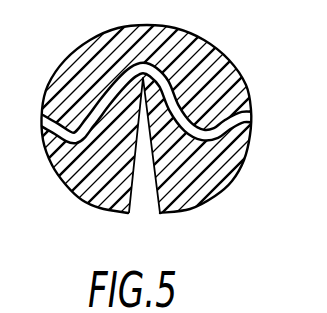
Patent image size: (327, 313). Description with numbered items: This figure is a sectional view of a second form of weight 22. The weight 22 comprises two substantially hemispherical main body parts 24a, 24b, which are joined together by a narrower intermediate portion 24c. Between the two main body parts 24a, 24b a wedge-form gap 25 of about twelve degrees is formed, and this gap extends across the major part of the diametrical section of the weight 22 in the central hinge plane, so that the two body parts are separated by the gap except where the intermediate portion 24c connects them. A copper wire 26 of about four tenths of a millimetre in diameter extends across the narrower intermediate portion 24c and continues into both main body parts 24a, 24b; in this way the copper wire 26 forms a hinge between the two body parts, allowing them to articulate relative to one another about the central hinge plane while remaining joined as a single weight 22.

The weight 22 is at (163, 133).
The main body part 24a is at (64, 171).
The main body part 24b is at (218, 177).
The narrower intermediate portion 24c is at (183, 30).
The wedge-form gap 25 is at (144, 199).
The copper wire 26 is at (186, 76).